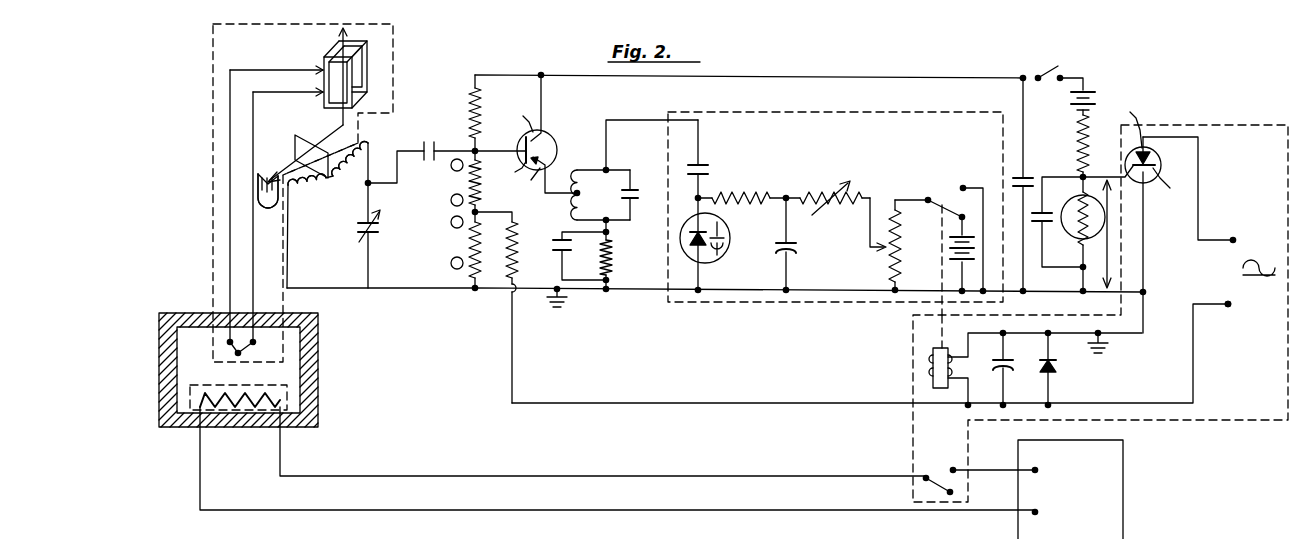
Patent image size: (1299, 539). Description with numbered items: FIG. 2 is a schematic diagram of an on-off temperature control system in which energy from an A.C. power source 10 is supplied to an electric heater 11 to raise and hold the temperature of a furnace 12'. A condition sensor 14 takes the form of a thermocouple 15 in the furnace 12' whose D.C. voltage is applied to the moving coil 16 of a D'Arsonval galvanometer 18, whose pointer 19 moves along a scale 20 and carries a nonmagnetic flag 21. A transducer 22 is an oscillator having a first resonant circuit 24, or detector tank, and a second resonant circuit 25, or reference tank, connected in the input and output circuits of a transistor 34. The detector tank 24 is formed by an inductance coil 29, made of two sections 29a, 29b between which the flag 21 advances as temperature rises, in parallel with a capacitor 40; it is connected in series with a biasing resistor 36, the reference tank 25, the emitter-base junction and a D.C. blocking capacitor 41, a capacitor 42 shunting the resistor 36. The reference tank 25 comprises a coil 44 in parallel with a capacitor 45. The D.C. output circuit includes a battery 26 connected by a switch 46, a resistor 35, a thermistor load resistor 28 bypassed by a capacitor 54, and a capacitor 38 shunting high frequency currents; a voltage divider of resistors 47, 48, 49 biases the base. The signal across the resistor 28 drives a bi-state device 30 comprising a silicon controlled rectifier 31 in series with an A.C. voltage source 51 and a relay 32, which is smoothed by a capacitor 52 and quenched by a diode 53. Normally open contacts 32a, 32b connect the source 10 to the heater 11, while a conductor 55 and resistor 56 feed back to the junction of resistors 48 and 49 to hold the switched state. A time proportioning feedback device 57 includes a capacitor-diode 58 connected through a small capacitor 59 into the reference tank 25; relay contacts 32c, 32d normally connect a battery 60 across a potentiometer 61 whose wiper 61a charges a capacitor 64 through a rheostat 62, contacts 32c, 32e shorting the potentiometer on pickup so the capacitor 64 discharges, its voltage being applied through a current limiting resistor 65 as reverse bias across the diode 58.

The energy source 10 is at (1125, 456).
The energy utilization device 11 is at (232, 423).
The furnace 12' is at (268, 370).
The condition sensor 14 is at (212, 50).
The thermocouple 15 is at (238, 353).
The moving coil 16 is at (370, 64).
The D'Arsonval galvanometer 18 is at (322, 56).
The pointer 19 is at (262, 170).
The scale 20 is at (267, 206).
The flag 21 is at (305, 140).
The transducer 22 is at (560, 68).
The first resonant circuit 24 is at (343, 255).
The second resonant circuit 25 is at (658, 231).
The battery 26 is at (1071, 104).
The load resistor 28 is at (1077, 238).
The inductance coil 29 is at (332, 184).
The coil section 29a is at (364, 143).
The coil section 29b is at (303, 190).
The bi-state device 30 is at (1243, 122).
The silicon controlled rectifier 31 is at (1158, 166).
The relay 32 is at (933, 362).
The normally open contact 32a is at (920, 482).
The normally open contact 32b is at (958, 466).
The relay contact 32c is at (934, 196).
The normally closed contact 32d is at (958, 217).
The normally open contact 32e is at (965, 183).
The transistor 34 is at (556, 137).
The resistor 35 is at (1078, 152).
The biasing resistor 36 is at (613, 256).
The capacitor 38 is at (1027, 173).
The capacitor 40 is at (377, 232).
The D.C. blocking capacitor 41 is at (428, 160).
The capacitor 42 is at (556, 250).
The inductance coil 44 is at (571, 206).
The capacitor 45 is at (633, 188).
The switch 46 is at (1052, 70).
The resistor 47 is at (466, 110).
The resistor 48 is at (472, 184).
The resistor 49 is at (468, 238).
The A.C. voltage source 51 is at (1232, 298).
The capacitor 52 is at (1008, 368).
The diode 53 is at (1056, 370).
The capacitor 54 is at (1034, 215).
The conductor 55 is at (768, 403).
The resistor 56 is at (518, 243).
The time proportioning feedback device 57 is at (880, 110).
The semi-conductor junction diode 58 is at (725, 262).
The capacitor 59 is at (706, 168).
The battery 60 is at (952, 264).
The potentiometer 61 is at (904, 243).
The wiper 61a is at (872, 240).
The rheostat 62 is at (816, 192).
The capacitor 64 is at (778, 250).
The current limiting resistor 65 is at (735, 204).